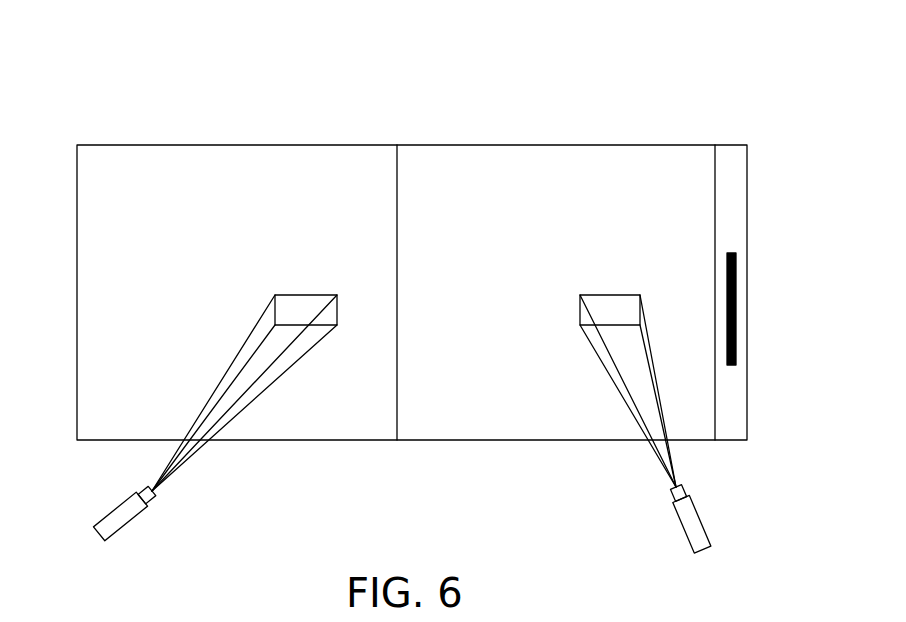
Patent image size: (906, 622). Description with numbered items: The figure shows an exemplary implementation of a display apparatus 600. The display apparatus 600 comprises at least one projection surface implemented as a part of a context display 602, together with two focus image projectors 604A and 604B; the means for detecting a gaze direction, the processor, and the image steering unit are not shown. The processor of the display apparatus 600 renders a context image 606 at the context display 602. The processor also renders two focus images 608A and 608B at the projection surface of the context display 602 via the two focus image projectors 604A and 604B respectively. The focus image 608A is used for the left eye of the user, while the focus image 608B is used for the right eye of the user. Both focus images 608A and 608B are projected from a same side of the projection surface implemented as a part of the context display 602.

The display apparatus 600 is at (636, 51).
The context display 602 is at (732, 266).
The focus image projector 604A is at (185, 418).
The focus image projector 604B is at (670, 424).
The context image 606 is at (412, 262).
The focus image 608A is at (277, 209).
The focus image 608B is at (629, 207).